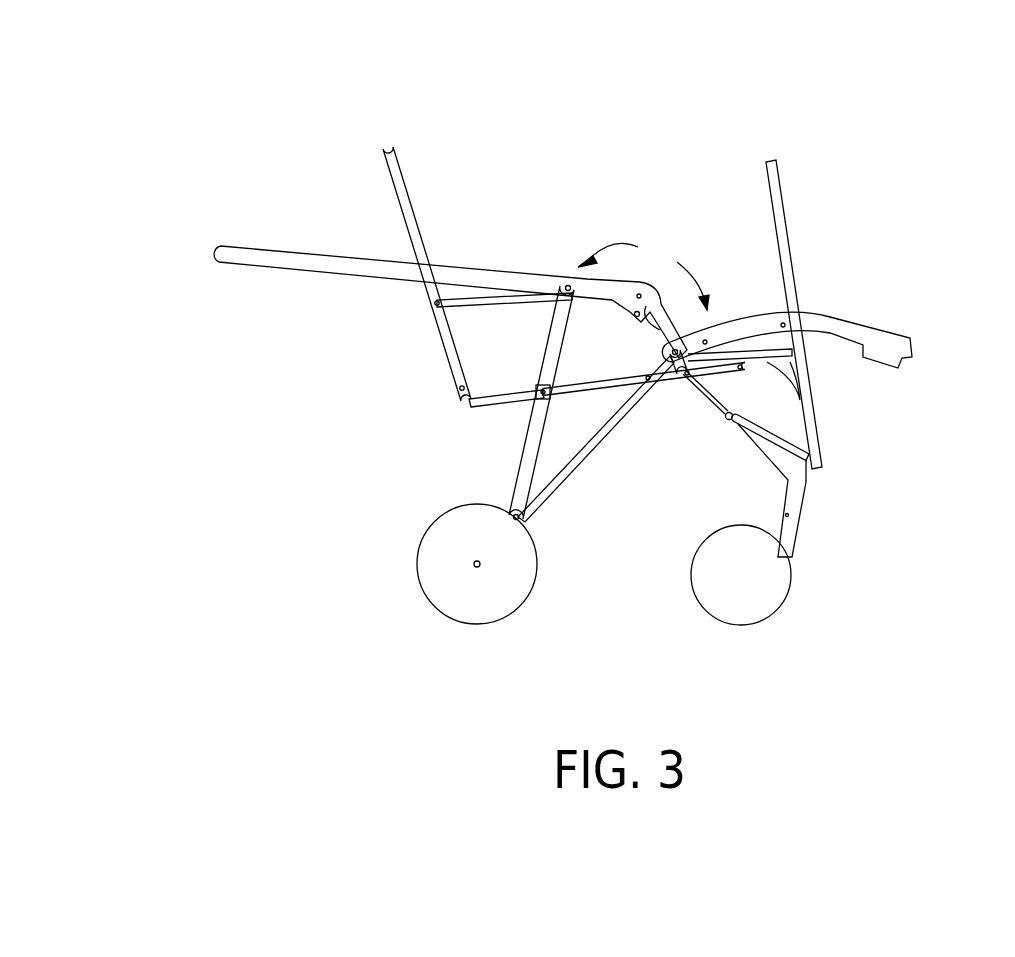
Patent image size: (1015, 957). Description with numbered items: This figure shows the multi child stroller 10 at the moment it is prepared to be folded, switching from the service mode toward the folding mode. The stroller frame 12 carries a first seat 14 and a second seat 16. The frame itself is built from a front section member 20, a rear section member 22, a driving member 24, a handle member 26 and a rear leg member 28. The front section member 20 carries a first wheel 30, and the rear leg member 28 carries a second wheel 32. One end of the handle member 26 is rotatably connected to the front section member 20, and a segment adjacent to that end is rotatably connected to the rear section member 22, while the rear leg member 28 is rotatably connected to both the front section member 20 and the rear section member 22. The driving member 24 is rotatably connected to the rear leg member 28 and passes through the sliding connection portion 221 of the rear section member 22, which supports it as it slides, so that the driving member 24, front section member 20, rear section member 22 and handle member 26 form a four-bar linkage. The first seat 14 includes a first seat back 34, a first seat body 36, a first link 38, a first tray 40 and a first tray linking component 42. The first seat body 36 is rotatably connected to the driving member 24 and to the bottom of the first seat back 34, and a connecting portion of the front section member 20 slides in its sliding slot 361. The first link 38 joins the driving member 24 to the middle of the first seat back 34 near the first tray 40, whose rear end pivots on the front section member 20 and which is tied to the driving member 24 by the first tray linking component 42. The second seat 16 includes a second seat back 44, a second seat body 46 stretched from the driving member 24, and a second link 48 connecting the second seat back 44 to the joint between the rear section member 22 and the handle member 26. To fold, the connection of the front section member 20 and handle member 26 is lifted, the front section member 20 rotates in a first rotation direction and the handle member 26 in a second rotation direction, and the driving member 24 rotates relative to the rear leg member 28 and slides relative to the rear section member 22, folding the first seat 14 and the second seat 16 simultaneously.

The multi child stroller 10 is at (858, 88).
The stroller frame 12 is at (533, 391).
The first seat 14 is at (826, 337).
The second seat 16 is at (415, 296).
The front section member 20 is at (797, 502).
The rear section member 22 is at (522, 472).
The sliding connection portion 221 is at (538, 388).
The driving member 24 is at (603, 382).
The handle member 26 is at (247, 250).
The rear leg member 28 is at (558, 478).
The first wheel 30 is at (778, 580).
The second wheel 32 is at (447, 533).
The first seat back 34 is at (778, 188).
The first seat body 36 is at (780, 444).
The sliding slot 361 is at (725, 425).
The first link 38 is at (802, 393).
The first tray 40 is at (893, 333).
The first tray linking component 42 is at (668, 367).
The second seat back 44 is at (392, 178).
The second seat body 46 is at (515, 403).
The second link 48 is at (510, 290).